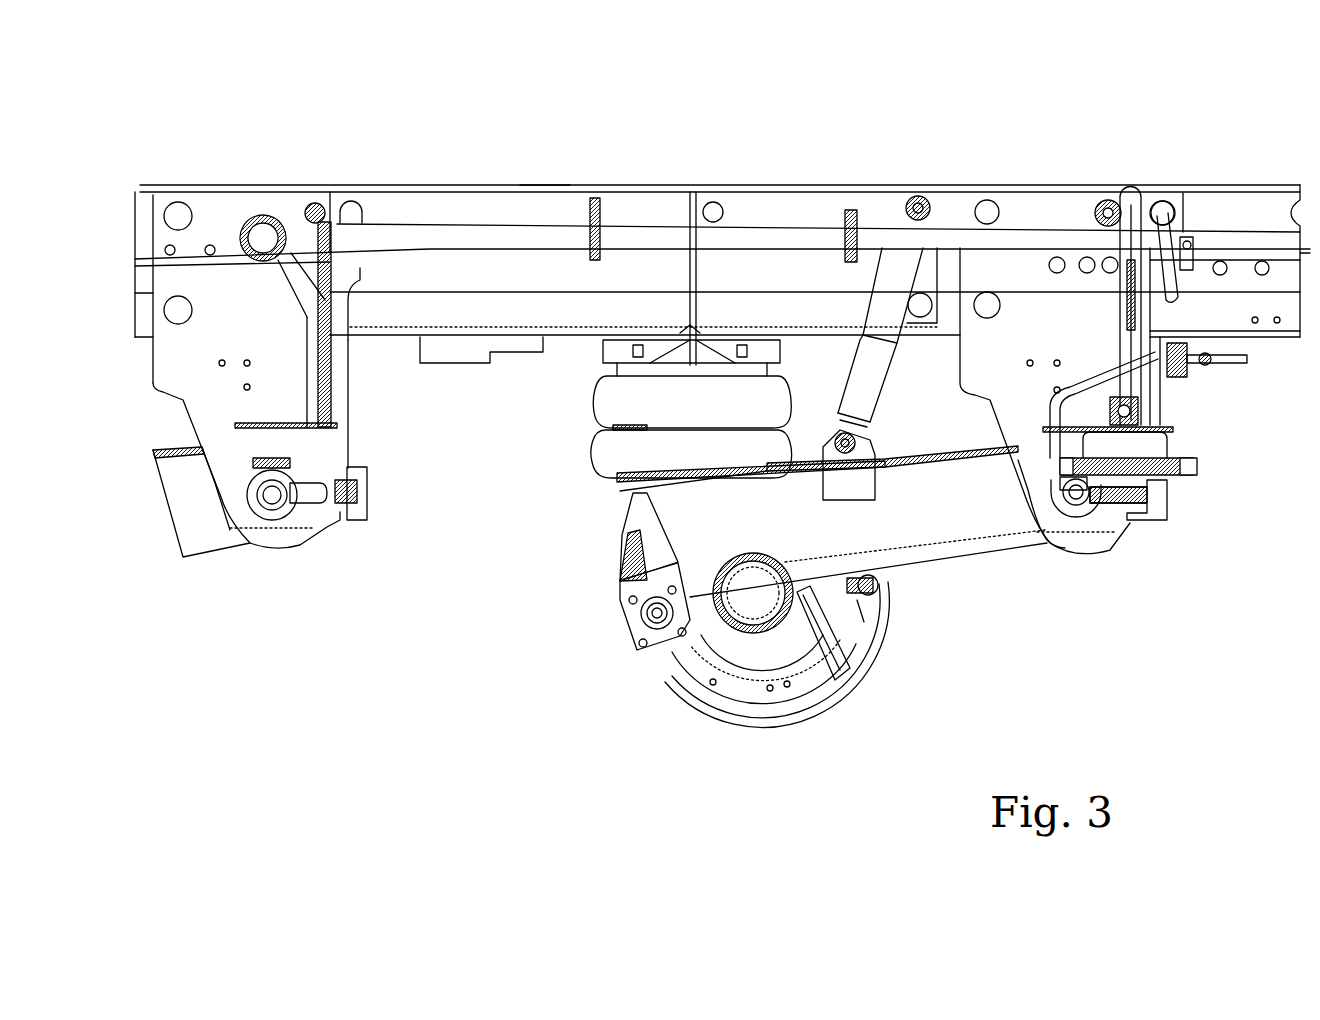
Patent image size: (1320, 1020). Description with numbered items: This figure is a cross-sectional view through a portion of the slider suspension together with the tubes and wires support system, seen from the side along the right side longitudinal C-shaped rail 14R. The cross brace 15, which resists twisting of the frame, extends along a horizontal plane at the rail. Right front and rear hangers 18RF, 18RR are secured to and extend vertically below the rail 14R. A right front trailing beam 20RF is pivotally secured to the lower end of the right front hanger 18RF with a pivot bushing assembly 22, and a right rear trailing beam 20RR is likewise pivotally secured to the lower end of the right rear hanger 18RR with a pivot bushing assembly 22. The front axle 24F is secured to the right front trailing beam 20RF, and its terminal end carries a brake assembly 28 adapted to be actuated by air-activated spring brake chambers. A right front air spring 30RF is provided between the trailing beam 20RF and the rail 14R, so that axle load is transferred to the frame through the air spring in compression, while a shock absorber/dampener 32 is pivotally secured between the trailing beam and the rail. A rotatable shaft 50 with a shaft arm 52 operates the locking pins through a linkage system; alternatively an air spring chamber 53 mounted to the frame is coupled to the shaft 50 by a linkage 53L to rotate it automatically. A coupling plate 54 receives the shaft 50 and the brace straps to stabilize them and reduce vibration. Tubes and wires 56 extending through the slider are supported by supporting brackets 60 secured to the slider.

The right side longitudinal C-shaped rail 14R is at (465, 207).
The cross brace 15 is at (552, 175).
The right rear hanger 18RR is at (230, 310).
The right front hanger 18RF is at (1098, 348).
The right rear trailing beam 20RR is at (200, 530).
The right front trailing beam 20RF is at (972, 533).
The pivot bushing assembly 22 is at (277, 498).
The front axle 24F is at (727, 613).
The brake assembly 28 is at (852, 637).
The right front air spring 30RF is at (620, 457).
The shock absorber/dampener 32 is at (900, 273).
The rotatable shaft 50 is at (395, 235).
The shaft arm 52 is at (1170, 270).
The air spring chamber 53 is at (1153, 480).
The linkage 53L is at (1127, 288).
The coupling plate 54 is at (697, 188).
The tubes and wires 56 is at (377, 250).
The tubes and wires supporting bracket 60 is at (604, 190).